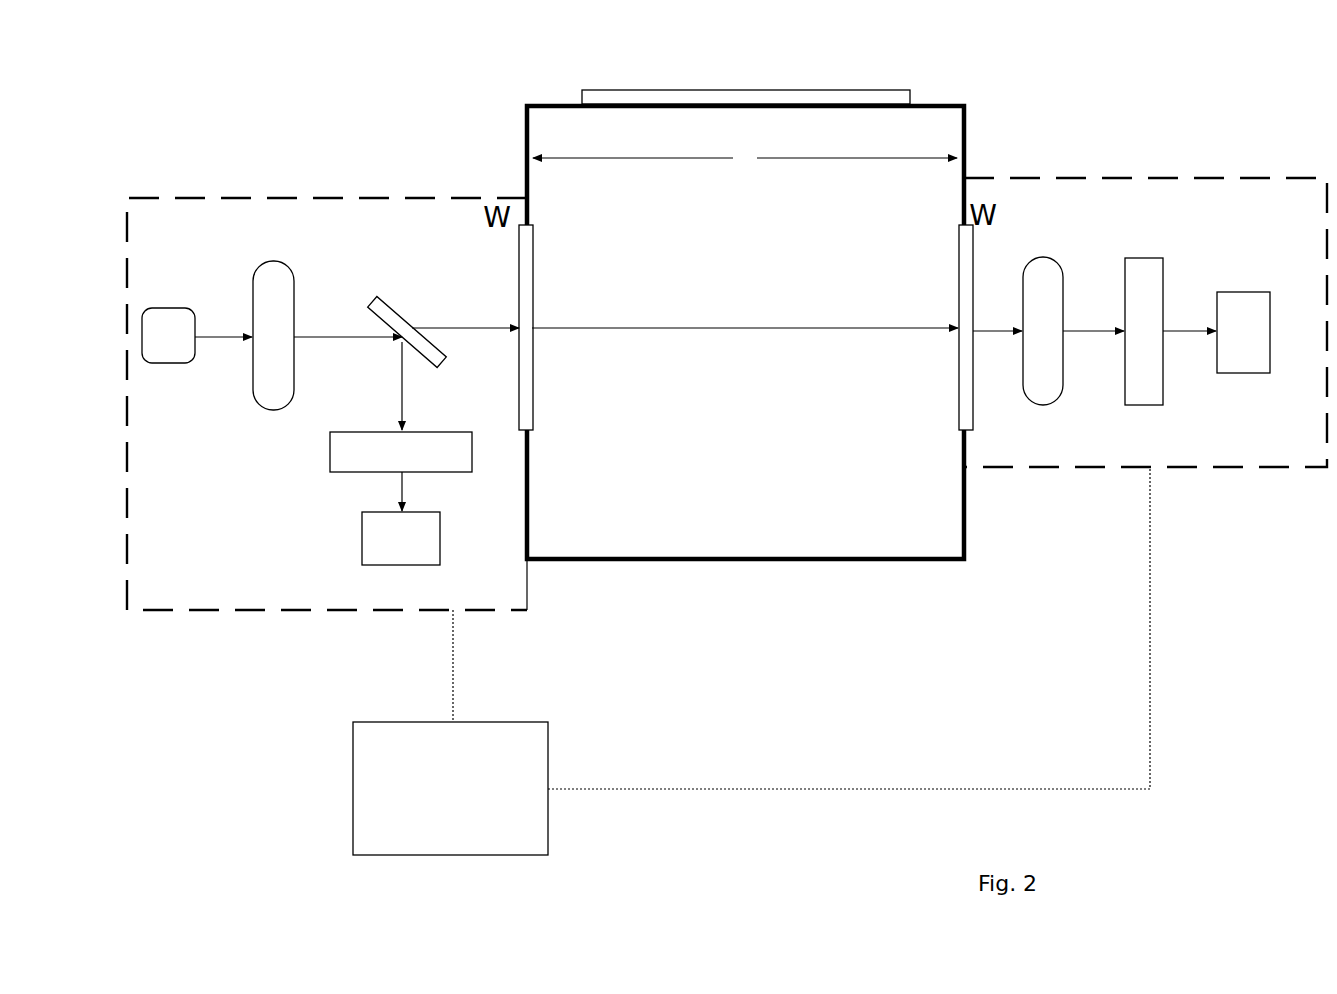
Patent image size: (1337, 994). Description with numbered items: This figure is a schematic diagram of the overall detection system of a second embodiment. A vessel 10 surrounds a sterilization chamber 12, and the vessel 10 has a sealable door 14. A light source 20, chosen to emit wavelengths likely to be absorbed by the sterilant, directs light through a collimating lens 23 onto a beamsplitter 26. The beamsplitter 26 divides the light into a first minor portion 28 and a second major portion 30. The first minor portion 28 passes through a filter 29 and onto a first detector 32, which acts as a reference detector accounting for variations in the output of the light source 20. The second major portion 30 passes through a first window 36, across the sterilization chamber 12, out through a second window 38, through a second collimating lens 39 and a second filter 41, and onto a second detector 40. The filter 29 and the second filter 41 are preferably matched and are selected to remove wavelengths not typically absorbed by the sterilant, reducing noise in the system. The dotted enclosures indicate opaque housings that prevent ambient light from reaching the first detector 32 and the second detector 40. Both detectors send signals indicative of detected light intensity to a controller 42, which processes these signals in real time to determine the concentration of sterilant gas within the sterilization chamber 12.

The vessel 10 is at (877, 563).
The sterilization chamber 12 is at (745, 299).
The sealable door 14 is at (840, 90).
The light source 20 is at (165, 308).
The collimating lens 23 is at (276, 262).
The beamsplitter 26 is at (393, 300).
The first minor portion 28 is at (398, 394).
The filter 29 is at (329, 449).
The second major portion 30 is at (462, 333).
The first detector 32 is at (361, 536).
The first window 36 is at (537, 291).
The second window 38 is at (955, 280).
The second collimating lens 39 is at (1042, 256).
The second detector 40 is at (1245, 291).
The second filter 41 is at (1152, 254).
The controller 42 is at (352, 787).